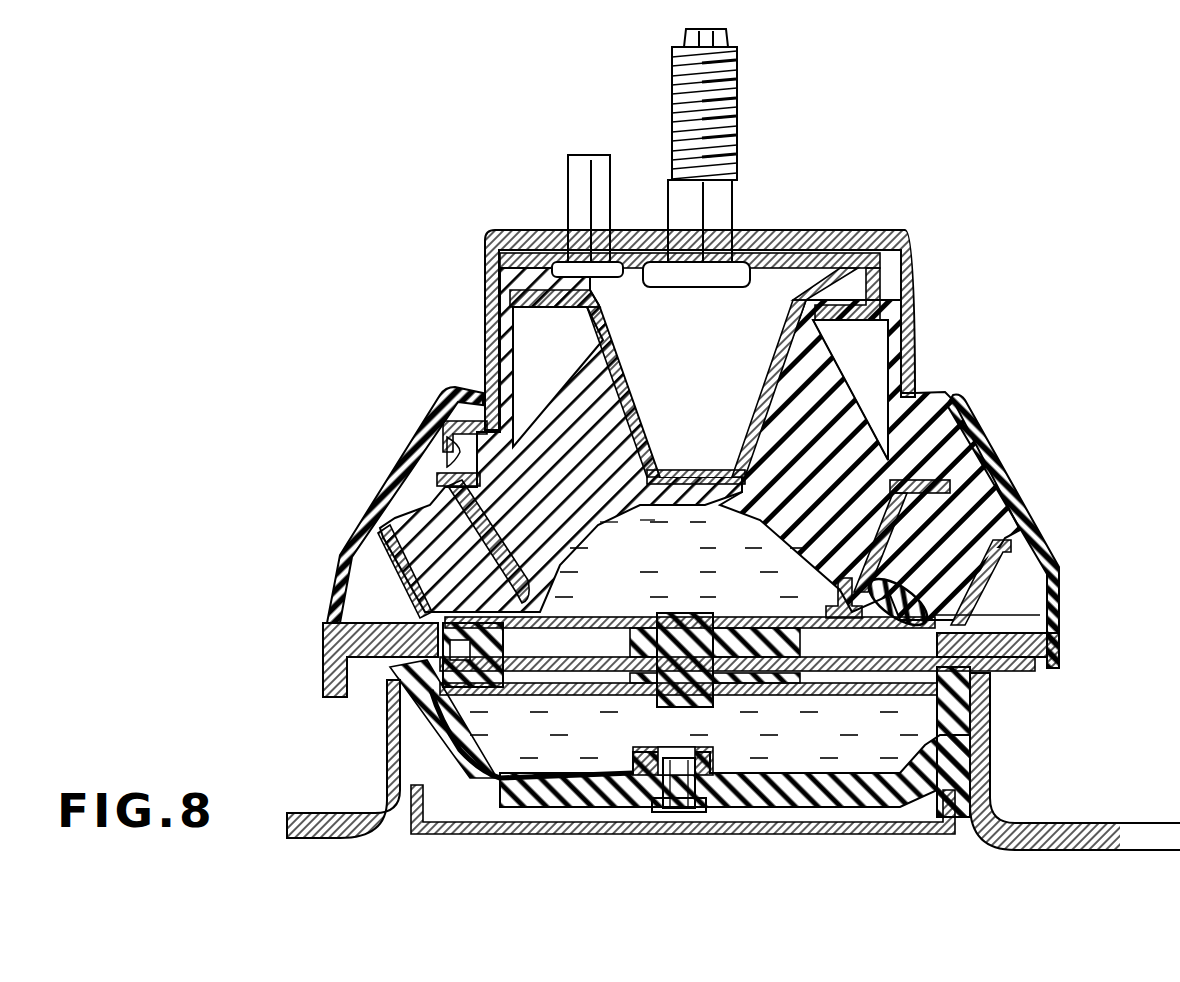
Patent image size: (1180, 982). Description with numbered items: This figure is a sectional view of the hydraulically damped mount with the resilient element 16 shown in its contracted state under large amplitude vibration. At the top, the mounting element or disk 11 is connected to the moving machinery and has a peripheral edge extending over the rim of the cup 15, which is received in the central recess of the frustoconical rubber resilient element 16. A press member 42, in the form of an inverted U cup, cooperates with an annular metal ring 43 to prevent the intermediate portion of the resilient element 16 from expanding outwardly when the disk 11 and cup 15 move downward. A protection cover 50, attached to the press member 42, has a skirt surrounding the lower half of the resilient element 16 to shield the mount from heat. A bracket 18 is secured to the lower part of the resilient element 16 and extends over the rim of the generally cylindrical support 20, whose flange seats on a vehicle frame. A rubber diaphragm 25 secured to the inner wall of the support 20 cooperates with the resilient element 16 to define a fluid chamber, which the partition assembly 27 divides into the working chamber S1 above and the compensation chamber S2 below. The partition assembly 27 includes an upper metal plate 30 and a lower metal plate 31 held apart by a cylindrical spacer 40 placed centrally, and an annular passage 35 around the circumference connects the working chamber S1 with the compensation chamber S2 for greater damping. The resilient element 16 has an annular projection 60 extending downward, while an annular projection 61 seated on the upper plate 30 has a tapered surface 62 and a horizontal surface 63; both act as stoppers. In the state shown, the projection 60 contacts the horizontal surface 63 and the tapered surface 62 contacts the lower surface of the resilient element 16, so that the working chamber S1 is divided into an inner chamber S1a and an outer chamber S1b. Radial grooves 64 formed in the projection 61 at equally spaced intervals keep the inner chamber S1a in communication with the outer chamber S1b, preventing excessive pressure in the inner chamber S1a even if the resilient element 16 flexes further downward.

The mounting element or disk 11 is at (800, 246).
The cup 15 is at (785, 378).
The resilient element or spring element 16 is at (850, 398).
The press member 42 is at (907, 338).
The annular metal ring 43 is at (415, 470).
The protection cover 50 is at (340, 555).
The radial grooves 64 is at (500, 553).
The bracket 18 is at (1000, 560).
The annular projection 61 is at (937, 592).
The tapered surface 62 is at (945, 525).
The annular projection 60 is at (838, 596).
The horizontal surface 63 is at (855, 617).
The inner chamber S1a is at (634, 530).
The working chamber S1 is at (692, 560).
The outer chamber S1b is at (940, 618).
The compensation chamber S2 is at (648, 735).
The partition assembly 27 is at (608, 612).
The upper metal plate 30 is at (741, 626).
The cylindrical spacer 40 is at (700, 705).
The lower metal plate 31 is at (512, 685).
The deformable element or diaphragm 25 is at (637, 818).
The passage 35 is at (412, 703).
The support 20 is at (987, 758).